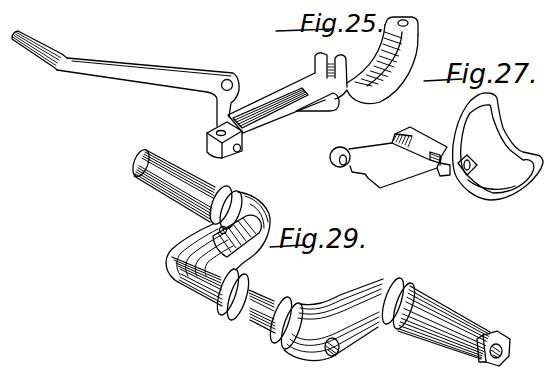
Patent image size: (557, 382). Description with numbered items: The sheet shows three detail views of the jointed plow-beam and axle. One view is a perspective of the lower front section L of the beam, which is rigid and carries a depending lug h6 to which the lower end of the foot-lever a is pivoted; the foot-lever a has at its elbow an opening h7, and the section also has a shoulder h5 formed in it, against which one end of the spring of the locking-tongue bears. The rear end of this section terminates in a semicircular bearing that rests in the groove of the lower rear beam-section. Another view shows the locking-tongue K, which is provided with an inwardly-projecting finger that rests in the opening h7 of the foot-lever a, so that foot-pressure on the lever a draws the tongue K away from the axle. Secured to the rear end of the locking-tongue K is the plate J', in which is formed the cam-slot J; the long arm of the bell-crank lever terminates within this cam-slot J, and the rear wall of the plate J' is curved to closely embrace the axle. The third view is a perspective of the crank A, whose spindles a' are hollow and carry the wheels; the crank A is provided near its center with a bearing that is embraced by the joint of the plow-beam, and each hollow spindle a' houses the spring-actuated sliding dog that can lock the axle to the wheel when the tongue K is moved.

In FIG. 25, the foot-lever a is at (125, 78).
In FIG. 29, the foot-lever a is at (188, 189).
In FIG. 25, the opening h7 is at (229, 78).
In FIG. 25, the shoulder h5 is at (235, 114).
In FIG. 25, the depending lug h6 is at (242, 148).
In FIG. 25, the lower front section of the beam L is at (409, 25).
In FIG. 27, the locking-tongue K is at (399, 157).
In FIG. 27, the plate J' is at (498, 146).
In FIG. 27, the cam-slot J is at (472, 166).
In FIG. 29, the crank A is at (194, 291).
In FIG. 29, the spindle a' is at (454, 326).